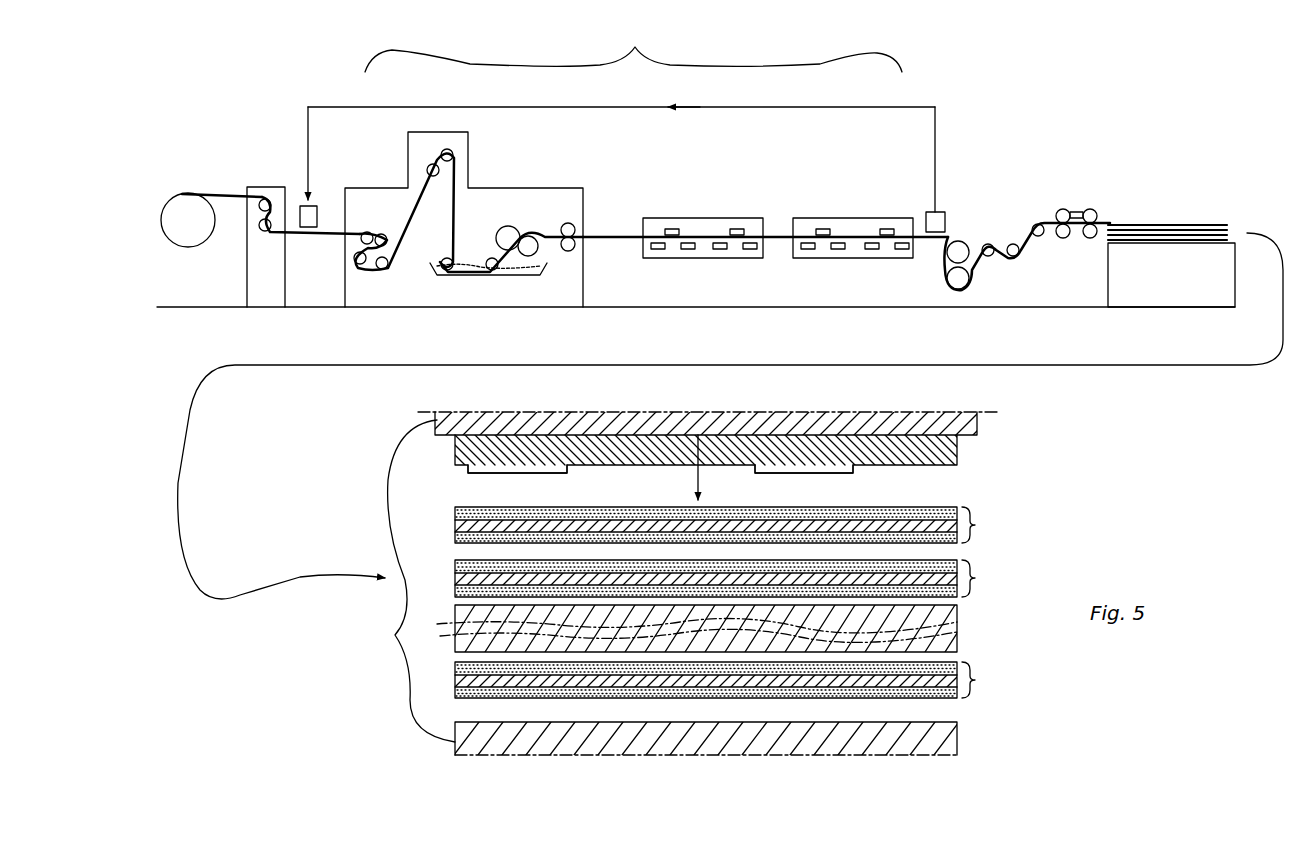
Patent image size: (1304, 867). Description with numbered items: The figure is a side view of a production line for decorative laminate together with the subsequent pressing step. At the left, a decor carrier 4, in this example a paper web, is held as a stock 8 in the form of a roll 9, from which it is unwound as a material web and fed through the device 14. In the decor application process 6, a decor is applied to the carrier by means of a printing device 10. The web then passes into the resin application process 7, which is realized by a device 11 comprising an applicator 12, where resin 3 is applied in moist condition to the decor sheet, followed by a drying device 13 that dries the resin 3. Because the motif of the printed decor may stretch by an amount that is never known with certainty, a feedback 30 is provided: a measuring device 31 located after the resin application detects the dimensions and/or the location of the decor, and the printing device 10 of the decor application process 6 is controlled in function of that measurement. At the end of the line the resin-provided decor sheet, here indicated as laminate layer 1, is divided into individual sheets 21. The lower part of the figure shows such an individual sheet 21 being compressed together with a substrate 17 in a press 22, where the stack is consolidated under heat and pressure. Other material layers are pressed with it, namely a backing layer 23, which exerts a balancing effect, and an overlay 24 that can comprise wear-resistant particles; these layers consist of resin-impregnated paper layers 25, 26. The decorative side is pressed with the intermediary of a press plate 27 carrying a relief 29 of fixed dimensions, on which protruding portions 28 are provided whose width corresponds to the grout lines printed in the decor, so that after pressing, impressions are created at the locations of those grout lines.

The laminate layer 1 is at (1046, 220).
The resin 3 is at (400, 254).
The decor carrier 4 is at (216, 197).
The decor application process 6 is at (296, 193).
The resin application process 7 is at (633, 47).
The stock 8 is at (186, 255).
The roll 9 is at (182, 210).
The printing device 10 is at (318, 210).
The device 11 is at (796, 292).
The applicator 12 is at (540, 188).
The drying device 13 is at (825, 216).
The device 14 is at (1000, 154).
The substrate 17 is at (937, 644).
The individual sheets 21 is at (1208, 238).
The press 22 is at (703, 583).
The backing layer 23 is at (975, 680).
The overlay 24 is at (733, 512).
The resin-impregnated paper layer 25 is at (903, 683).
The resin-impregnated paper layer 26 is at (895, 525).
The press plate 27 is at (917, 453).
The protruding portions 28 is at (520, 466).
The relief 29 is at (449, 463).
The feedback 30 is at (820, 107).
The measuring device 31 is at (946, 215).